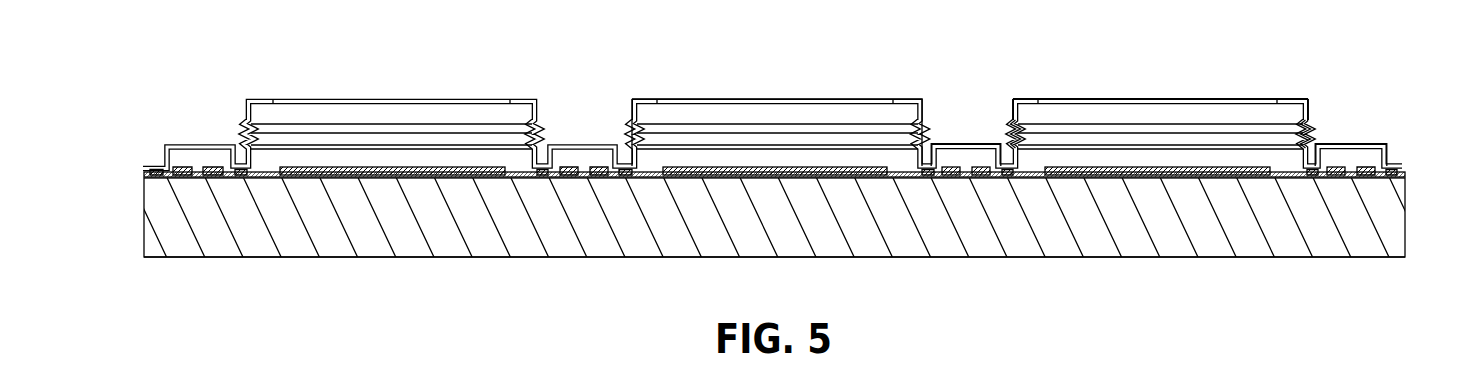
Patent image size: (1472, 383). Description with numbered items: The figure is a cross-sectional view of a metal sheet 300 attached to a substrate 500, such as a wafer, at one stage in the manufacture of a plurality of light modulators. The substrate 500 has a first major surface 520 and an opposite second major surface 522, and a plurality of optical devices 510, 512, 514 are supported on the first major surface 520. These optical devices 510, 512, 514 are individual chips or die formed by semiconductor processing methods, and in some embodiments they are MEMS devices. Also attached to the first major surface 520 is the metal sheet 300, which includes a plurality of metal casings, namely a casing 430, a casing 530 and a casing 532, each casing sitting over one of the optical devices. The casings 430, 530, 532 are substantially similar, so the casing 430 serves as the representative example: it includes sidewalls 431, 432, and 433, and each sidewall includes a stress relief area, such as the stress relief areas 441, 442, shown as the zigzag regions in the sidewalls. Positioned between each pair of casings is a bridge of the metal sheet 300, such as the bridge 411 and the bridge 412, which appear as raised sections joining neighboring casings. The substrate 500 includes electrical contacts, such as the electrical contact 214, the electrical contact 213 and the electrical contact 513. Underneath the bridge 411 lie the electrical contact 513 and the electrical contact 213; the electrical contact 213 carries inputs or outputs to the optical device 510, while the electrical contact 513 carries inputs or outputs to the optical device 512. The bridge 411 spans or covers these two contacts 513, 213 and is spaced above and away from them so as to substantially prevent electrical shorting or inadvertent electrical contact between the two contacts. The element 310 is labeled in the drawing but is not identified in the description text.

The substrate 500 is at (143, 215).
The optical device 510 is at (1172, 167).
The optical device 512 is at (812, 167).
The optical device 514 is at (420, 167).
The first major surface 520 is at (647, 177).
The second major surface 522 is at (607, 258).
The casing 530 is at (641, 99).
The casing 532 is at (524, 99).
The metal sheet 300 is at (906, 99).
The third package module 310 is at (1120, 99).
The casing 430 is at (1022, 97).
The sidewall 431 is at (1012, 110).
The sidewall 432 is at (1312, 98).
The sidewall 433 is at (1187, 122).
The stress relief area 441 is at (1008, 148).
The stress relief area 442 is at (1306, 134).
The bridge 411 is at (967, 144).
The bridge 412 is at (1350, 144).
The electrical contact 213 is at (983, 177).
The electrical contact 214 is at (1338, 178).
The electrical contact 513 is at (953, 178).